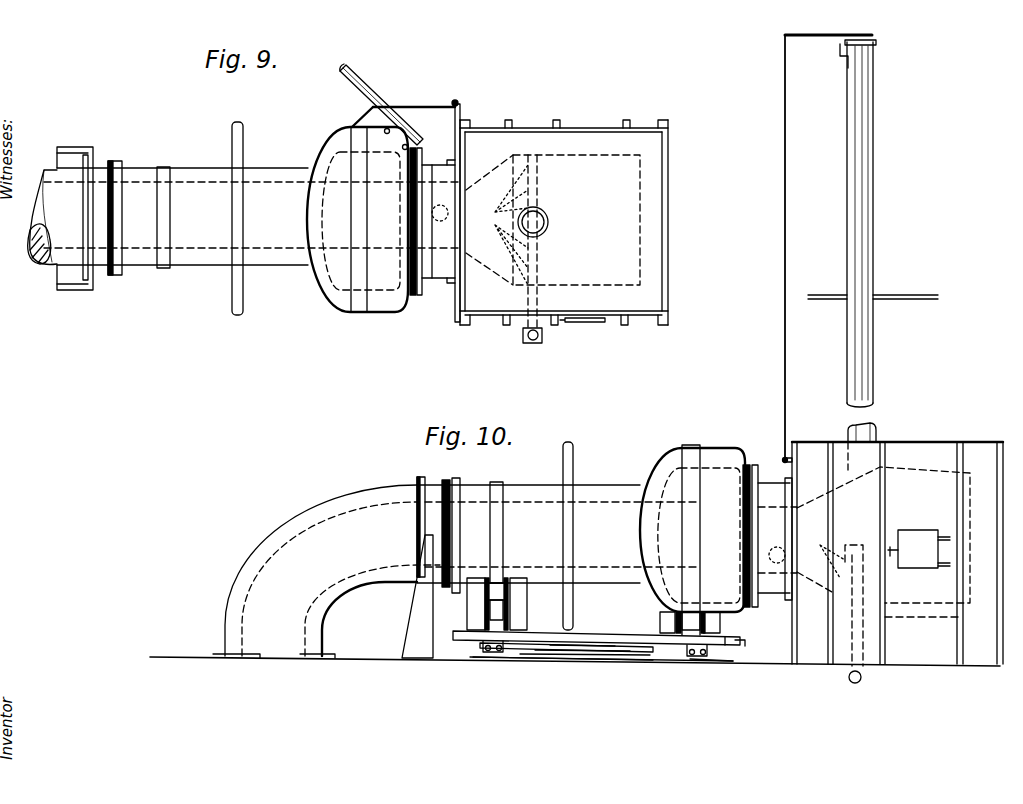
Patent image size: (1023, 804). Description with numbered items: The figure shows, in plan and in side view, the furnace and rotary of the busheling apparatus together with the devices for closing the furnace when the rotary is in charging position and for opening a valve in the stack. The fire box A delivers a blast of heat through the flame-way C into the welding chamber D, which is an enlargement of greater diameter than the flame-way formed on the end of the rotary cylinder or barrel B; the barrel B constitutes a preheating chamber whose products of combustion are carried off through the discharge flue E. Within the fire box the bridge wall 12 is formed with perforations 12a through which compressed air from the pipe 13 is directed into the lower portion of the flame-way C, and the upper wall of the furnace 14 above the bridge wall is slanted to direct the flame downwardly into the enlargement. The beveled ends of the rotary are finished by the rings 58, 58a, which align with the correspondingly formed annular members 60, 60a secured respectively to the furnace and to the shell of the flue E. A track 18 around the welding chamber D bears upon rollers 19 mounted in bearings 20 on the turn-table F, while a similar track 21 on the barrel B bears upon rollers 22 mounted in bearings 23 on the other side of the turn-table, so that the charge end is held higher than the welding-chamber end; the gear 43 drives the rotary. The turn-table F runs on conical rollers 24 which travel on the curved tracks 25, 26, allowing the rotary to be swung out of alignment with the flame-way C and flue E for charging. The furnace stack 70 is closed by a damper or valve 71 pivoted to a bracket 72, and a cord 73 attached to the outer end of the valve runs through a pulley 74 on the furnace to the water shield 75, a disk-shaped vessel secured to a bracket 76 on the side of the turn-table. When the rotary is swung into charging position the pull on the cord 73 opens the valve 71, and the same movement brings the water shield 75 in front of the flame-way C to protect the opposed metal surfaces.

In FIG. 9, the discharge flue E is at (50, 178).
In FIG. 10, the discharge flue E is at (350, 520).
In FIG. 9, the annular member 60a is at (97, 172).
In FIG. 9, the ring 58a is at (111, 167).
In FIG. 10, the ring 58a is at (456, 485).
In FIG. 9, the track 21 is at (163, 178).
In FIG. 10, the track 21 is at (500, 500).
In FIG. 9, the rotary cylinder B is at (202, 238).
In FIG. 10, the rotary cylinder B is at (608, 510).
In FIG. 9, the gear 43 is at (243, 300).
In FIG. 10, the gear 43 is at (573, 462).
In FIG. 9, the welding chamber D is at (345, 280).
In FIG. 10, the welding chamber D is at (678, 458).
In FIG. 9, the track 18 is at (360, 300).
In FIG. 10, the track 18 is at (700, 450).
In FIG. 9, the bracket 76 is at (352, 127).
In FIG. 9, the water shield 75 is at (380, 95).
In FIG. 9, the cord 73 is at (415, 107).
In FIG. 9, the pulley 74 is at (456, 103).
In FIG. 9, the ring 58 is at (418, 292).
In FIG. 10, the ring 58 is at (755, 608).
In FIG. 9, the annular member 60 is at (446, 272).
In FIG. 10, the annular member 60 is at (433, 486).
In FIG. 9, the flame-way C is at (440, 214).
In FIG. 10, the flame-way C is at (777, 539).
In FIG. 9, the fire box A is at (668, 202).
In FIG. 10, the fire box A is at (938, 452).
In FIG. 9, the perforations 12a is at (503, 225).
In FIG. 10, the perforations 12a is at (822, 554).
In FIG. 9, the stack 70 is at (547, 215).
In FIG. 9, the bridge wall 12 is at (540, 262).
In FIG. 10, the bridge wall 12 is at (860, 547).
In FIG. 9, the pipe 13 is at (542, 342).
In FIG. 10, the pipe 13 is at (862, 680).
In FIG. 9, the valve 71 is at (878, 44).
In FIG. 9, the bracket 72 is at (842, 58).
In FIG. 10, the upper wall of the furnace 14 is at (838, 470).
In FIG. 10, the rollers 22 is at (495, 590).
In FIG. 10, the bearings 23 is at (505, 588).
In FIG. 10, the bearings 20 is at (660, 626).
In FIG. 10, the rollers 19 is at (690, 630).
In FIG. 10, the turn-table F is at (598, 655).
In FIG. 10, the rollers 24 is at (495, 655).
In FIG. 10, the track 25 is at (482, 660).
In FIG. 10, the track 26 is at (720, 664).